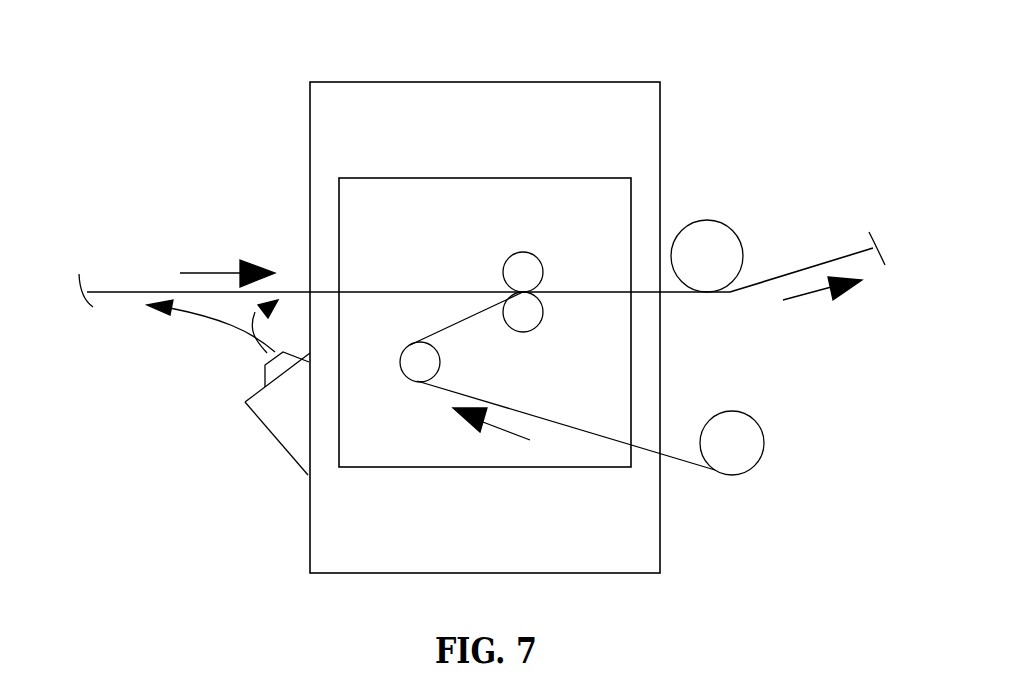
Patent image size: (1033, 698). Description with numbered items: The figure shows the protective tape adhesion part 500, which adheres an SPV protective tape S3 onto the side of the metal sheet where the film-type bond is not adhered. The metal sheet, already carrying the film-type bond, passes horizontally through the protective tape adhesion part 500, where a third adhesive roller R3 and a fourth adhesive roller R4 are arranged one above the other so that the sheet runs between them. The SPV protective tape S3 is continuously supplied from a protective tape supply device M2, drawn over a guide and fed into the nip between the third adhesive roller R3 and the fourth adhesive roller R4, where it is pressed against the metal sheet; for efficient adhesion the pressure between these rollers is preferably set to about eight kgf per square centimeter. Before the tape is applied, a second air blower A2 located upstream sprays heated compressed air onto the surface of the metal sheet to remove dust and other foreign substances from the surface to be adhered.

The protective tape adhesion part 500 is at (657, 125).
The third adhesive roller R3 is at (513, 270).
The fourth adhesive roller R4 is at (533, 313).
The SPV protective tape S3 is at (450, 392).
The protective tape supply device M2 is at (750, 445).
The second air blower A2 is at (278, 425).